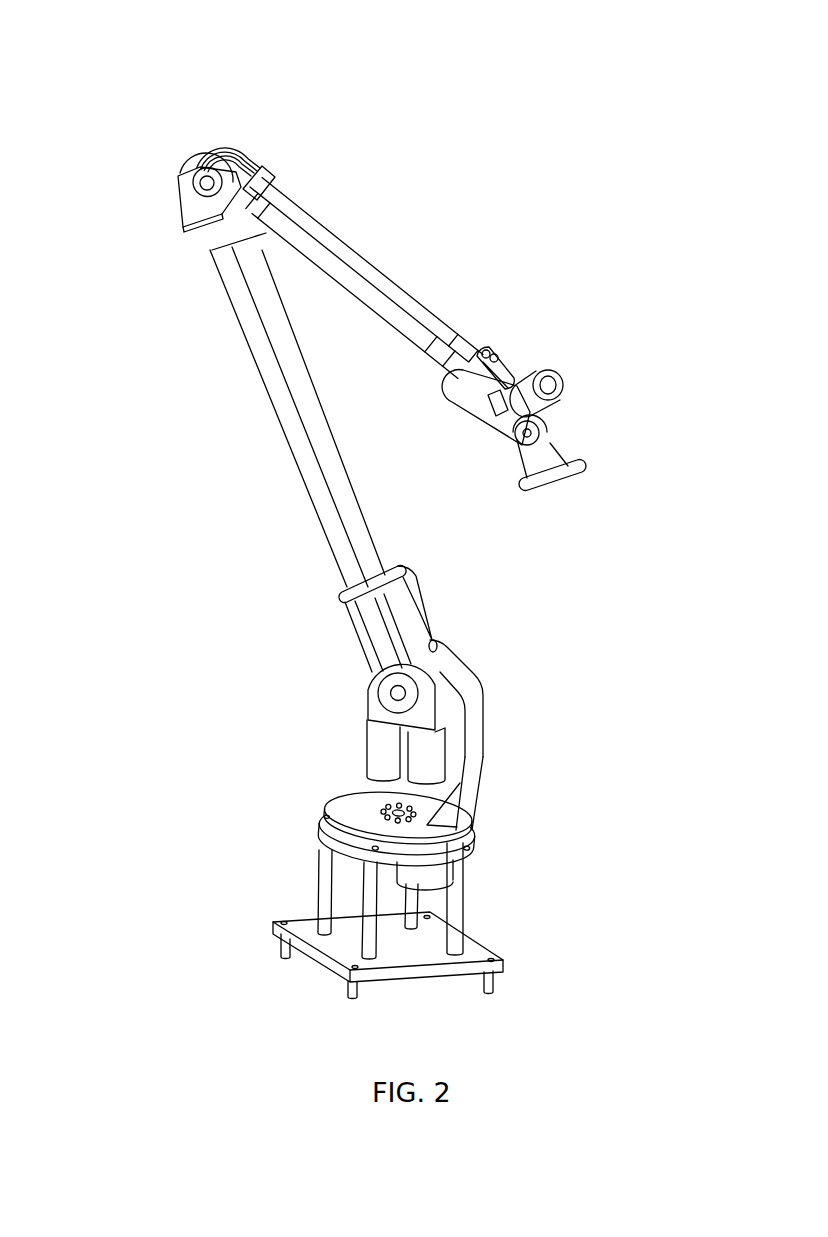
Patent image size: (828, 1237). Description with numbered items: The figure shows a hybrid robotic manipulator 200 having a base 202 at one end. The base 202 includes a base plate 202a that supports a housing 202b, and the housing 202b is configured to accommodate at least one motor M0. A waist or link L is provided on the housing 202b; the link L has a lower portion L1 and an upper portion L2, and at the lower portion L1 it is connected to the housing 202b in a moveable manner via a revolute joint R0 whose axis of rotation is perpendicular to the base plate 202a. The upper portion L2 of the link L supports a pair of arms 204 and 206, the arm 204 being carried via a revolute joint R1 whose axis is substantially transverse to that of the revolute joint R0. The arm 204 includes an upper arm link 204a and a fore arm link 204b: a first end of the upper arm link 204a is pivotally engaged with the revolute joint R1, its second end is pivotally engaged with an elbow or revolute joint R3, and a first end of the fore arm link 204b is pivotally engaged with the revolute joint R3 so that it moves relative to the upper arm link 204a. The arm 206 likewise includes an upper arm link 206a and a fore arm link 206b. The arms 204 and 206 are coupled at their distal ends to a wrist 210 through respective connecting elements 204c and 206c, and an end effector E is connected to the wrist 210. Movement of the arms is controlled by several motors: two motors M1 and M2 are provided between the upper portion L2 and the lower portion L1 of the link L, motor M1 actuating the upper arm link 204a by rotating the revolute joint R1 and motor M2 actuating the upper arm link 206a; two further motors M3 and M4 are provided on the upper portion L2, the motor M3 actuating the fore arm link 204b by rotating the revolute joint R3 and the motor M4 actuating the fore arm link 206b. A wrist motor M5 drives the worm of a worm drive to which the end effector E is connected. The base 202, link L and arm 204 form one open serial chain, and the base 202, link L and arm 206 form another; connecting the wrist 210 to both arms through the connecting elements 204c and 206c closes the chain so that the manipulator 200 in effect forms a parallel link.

The hybrid robotic manipulator 200 is at (400, 503).
The base 202 is at (496, 819).
The base plate 202a is at (503, 963).
The housing 202b is at (475, 843).
The motor M0 is at (373, 882).
The revolute joint R0 is at (327, 815).
The link L is at (540, 735).
The lower portion L1 is at (470, 797).
The upper portion L2 is at (483, 690).
The motor M1 is at (367, 767).
The motor M2 is at (428, 740).
The revolute joint R1 is at (367, 678).
The motor M3 is at (357, 608).
The motor M4 is at (398, 565).
The arm 204 is at (305, 390).
The upper arm link 204a is at (292, 440).
The fore arm link 204b is at (363, 290).
The connecting element 204c is at (447, 360).
The arm 206 is at (411, 360).
The upper arm link 206a is at (335, 470).
The fore arm link 206b is at (300, 208).
The connecting element 206c is at (468, 344).
The revolute joint R3 is at (193, 172).
The wrist 210 is at (546, 378).
The wrist motor M5 is at (563, 383).
The end effector E is at (560, 473).